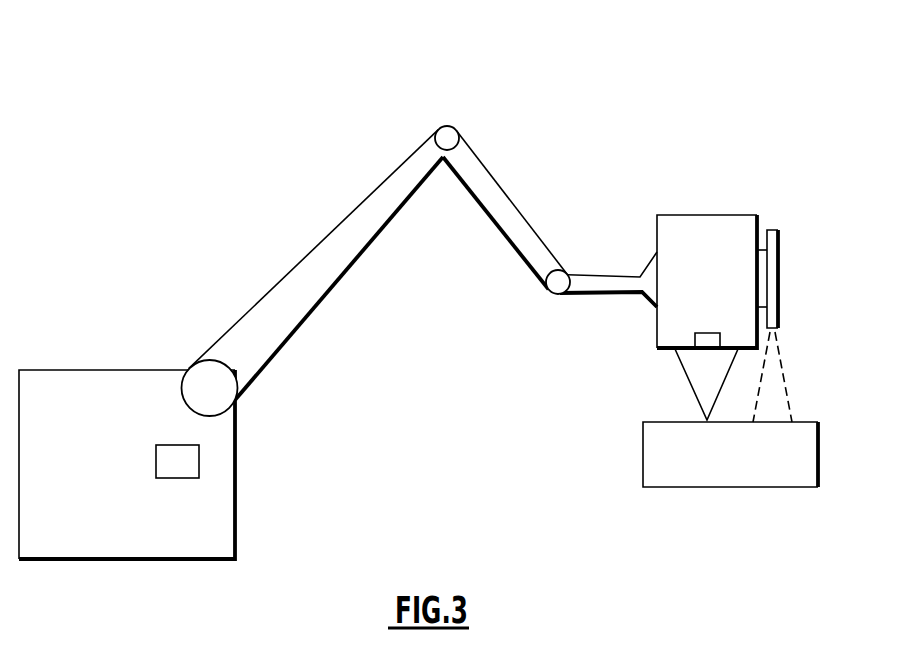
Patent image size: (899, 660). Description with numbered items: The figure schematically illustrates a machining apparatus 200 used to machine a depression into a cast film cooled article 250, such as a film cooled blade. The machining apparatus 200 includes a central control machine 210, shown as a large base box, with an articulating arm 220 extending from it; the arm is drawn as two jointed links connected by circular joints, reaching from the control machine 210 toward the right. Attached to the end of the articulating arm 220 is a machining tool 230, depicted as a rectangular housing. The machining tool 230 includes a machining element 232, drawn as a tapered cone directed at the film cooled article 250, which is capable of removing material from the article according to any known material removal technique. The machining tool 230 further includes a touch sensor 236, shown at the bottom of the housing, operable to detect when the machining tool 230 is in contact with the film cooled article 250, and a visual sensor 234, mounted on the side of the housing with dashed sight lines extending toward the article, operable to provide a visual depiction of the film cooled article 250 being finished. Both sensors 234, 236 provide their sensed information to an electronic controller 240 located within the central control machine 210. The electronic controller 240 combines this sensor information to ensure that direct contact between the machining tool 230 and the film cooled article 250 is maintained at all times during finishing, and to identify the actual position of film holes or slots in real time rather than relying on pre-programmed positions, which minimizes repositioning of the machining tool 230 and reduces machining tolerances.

The machining apparatus 200 is at (606, 103).
The central control machine 210 is at (102, 370).
The articulating arm 220 is at (327, 234).
The machining tool 230 is at (730, 228).
The machining element 232 is at (697, 367).
The visual sensor 234 is at (780, 240).
The touch sensor 236 is at (713, 332).
The electronic controller 240 is at (185, 466).
The film cooled article 250 is at (753, 466).